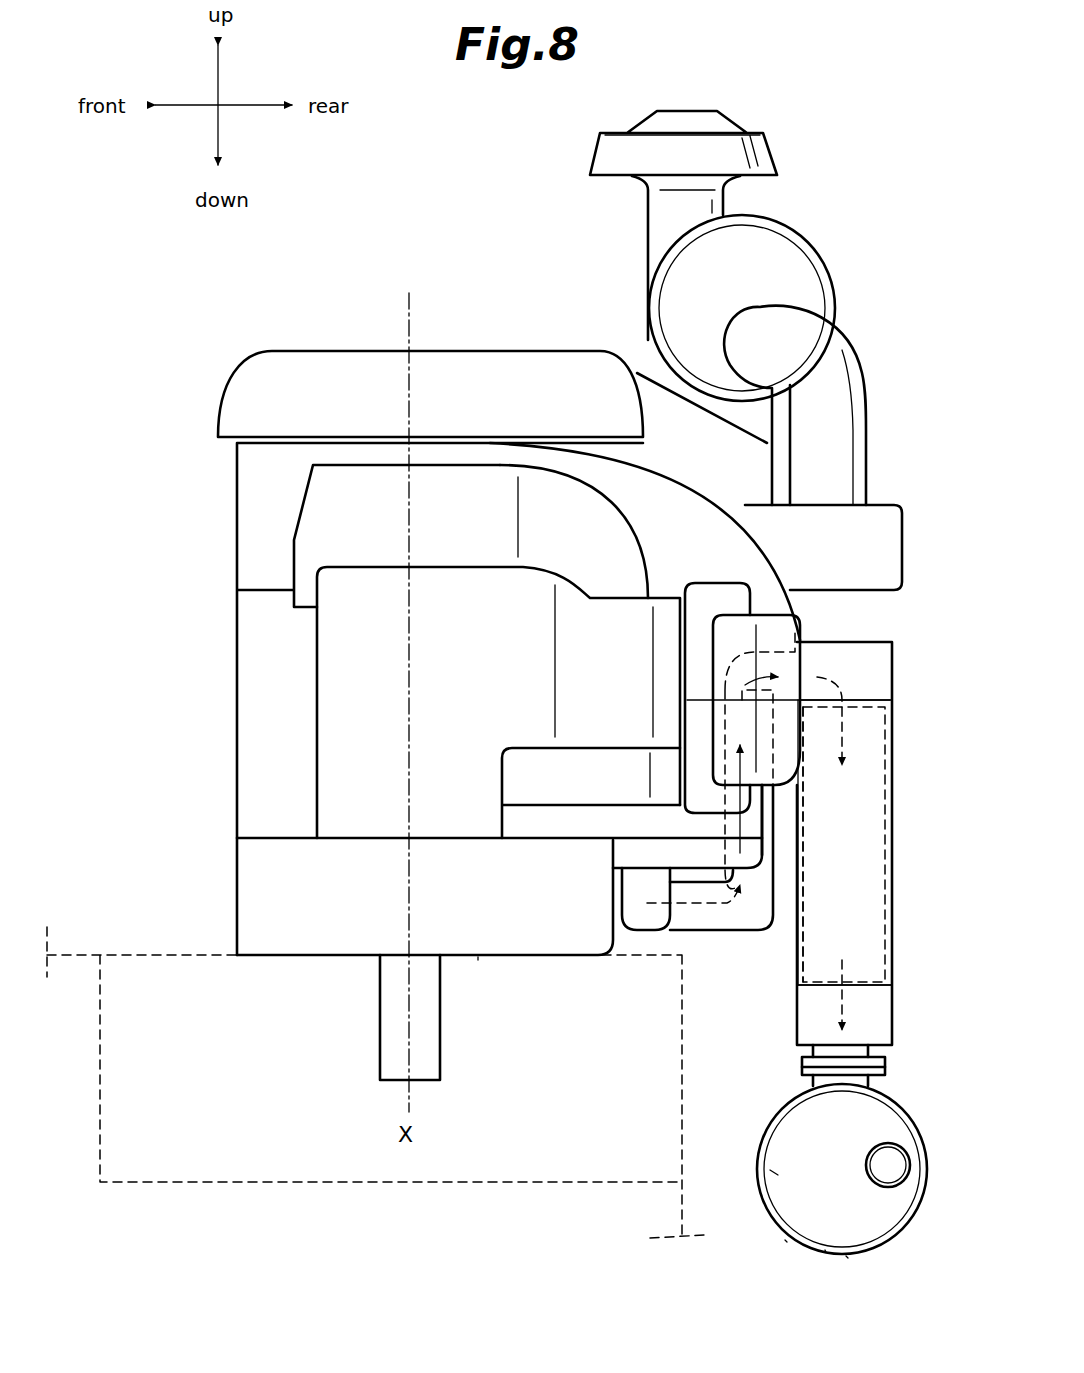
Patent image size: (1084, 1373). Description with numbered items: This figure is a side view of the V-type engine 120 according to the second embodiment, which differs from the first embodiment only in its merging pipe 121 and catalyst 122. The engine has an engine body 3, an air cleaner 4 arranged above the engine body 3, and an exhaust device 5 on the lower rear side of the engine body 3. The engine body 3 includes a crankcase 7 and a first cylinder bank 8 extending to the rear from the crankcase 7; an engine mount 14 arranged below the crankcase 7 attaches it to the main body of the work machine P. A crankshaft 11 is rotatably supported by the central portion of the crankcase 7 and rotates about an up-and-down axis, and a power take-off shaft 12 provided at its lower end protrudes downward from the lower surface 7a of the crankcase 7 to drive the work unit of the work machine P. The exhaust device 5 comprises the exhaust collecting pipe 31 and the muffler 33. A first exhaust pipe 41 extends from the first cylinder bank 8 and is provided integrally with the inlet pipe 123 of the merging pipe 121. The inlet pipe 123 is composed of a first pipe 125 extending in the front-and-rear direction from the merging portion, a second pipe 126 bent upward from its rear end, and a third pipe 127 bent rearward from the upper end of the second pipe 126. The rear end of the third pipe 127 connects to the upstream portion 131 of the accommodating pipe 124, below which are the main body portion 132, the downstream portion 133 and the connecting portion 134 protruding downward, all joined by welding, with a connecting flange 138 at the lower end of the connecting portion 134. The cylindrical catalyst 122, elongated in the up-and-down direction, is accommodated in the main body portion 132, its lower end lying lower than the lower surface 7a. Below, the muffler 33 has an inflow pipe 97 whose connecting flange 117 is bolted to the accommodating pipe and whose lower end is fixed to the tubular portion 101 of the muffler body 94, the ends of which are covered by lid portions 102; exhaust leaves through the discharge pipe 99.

The engine body 3 is at (257, 968).
The air cleaner 4 is at (825, 205).
The exhaust device 5 is at (893, 1256).
The crankcase 7 is at (533, 965).
The lower surface 7a is at (478, 958).
The first cylinder bank 8 is at (800, 625).
The crankshaft 11 is at (452, 1060).
The power take-off shaft 12 is at (380, 1068).
The engine mount 14 is at (157, 950).
The exhaust collecting pipe 31 is at (897, 888).
The muffler 33 is at (784, 1243).
The first exhaust pipe 41 is at (613, 897).
The muffler body 94 is at (824, 1252).
The inflow pipe 97 is at (872, 1084).
The discharge pipe 99 is at (893, 1187).
The tubular portion 101 is at (848, 1258).
The lid portion 102 is at (777, 1175).
The connecting flange 117 is at (885, 1072).
The V-type engine 120 is at (250, 340).
The merging pipe 121 is at (718, 937).
The catalyst 122 is at (887, 818).
The inlet pipe 123 is at (757, 937).
The accommodating pipe 124 is at (898, 645).
The first pipe 125 is at (670, 930).
The second pipe 126 is at (777, 833).
The third pipe 127 is at (800, 632).
The upstream portion 131 is at (893, 690).
The main body portion 132 is at (893, 760).
The downstream portion 133 is at (892, 1015).
The connecting portion 134 is at (892, 1047).
The connecting flange 138 is at (885, 1060).
The work machine P is at (67, 948).